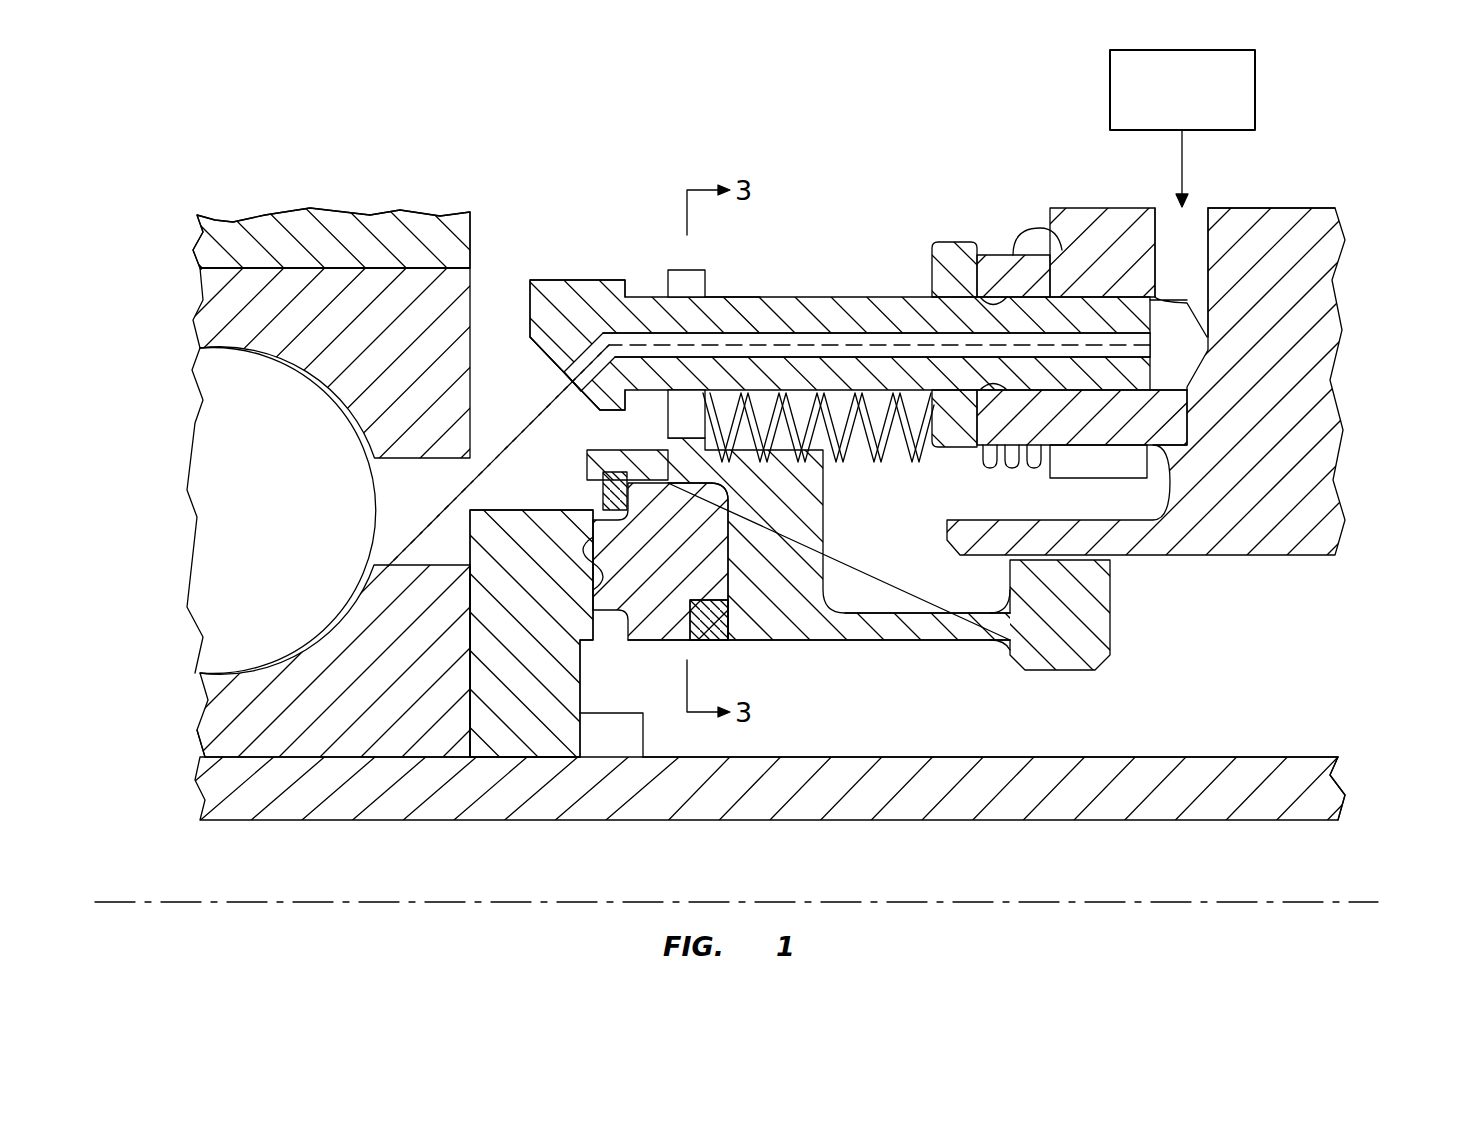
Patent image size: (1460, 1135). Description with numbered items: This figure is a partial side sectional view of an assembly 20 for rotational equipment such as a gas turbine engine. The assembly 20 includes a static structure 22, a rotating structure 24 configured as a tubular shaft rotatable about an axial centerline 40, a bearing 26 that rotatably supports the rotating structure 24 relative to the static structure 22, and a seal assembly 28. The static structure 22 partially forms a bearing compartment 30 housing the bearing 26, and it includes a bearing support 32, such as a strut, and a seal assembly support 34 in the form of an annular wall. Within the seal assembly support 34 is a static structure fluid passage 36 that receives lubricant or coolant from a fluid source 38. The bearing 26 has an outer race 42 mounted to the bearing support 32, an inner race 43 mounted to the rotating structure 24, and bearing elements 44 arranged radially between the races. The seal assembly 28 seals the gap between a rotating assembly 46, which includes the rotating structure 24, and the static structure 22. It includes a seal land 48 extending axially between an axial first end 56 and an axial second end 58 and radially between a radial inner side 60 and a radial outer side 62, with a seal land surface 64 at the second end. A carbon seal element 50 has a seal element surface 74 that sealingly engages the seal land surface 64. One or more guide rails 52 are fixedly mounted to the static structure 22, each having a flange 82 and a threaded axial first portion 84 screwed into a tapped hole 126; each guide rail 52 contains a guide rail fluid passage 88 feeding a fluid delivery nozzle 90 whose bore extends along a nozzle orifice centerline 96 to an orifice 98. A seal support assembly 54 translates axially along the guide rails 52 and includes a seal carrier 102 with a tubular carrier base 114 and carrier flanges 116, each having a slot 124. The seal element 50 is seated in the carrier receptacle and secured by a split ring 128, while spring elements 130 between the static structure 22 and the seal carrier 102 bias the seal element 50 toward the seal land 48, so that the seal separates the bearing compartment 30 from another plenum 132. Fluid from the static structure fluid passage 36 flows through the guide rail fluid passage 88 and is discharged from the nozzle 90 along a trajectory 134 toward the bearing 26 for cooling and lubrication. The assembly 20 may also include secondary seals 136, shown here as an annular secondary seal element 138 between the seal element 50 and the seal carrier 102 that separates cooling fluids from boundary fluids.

The assembly 20 is at (212, 167).
The static structure 22 is at (258, 213).
The rotating structure 24 is at (199, 791).
The bearing 26 is at (181, 662).
The seal assembly 28 is at (772, 686).
The bearing compartment 30 is at (559, 137).
The bearing support 32 is at (340, 212).
The seal assembly support 34 is at (1338, 218).
The static structure fluid passage 36 is at (1179, 248).
The fluid source 38 is at (1255, 88).
The axial centerline 40 is at (1365, 902).
The outer race 42 is at (200, 320).
The inner race 43 is at (200, 728).
The bearing elements 44 is at (197, 556).
The rotating assembly 46 is at (1352, 780).
The seal land 48 is at (493, 760).
The seal element 50 is at (648, 644).
The guide rail 52 is at (808, 297).
The seal support assembly 54 is at (908, 668).
The axial first end 56 is at (470, 680).
The axial second end 58 is at (587, 712).
The radial inner side 60 is at (522, 760).
The radial outer side 62 is at (513, 507).
The seal land surface 64 is at (598, 572).
The seal element surface 74 is at (608, 560).
The flange 82 is at (950, 240).
The axial first portion 84 is at (1095, 412).
The guide rail fluid passage 88 is at (875, 340).
The fluid delivery nozzle 90 is at (582, 278).
The nozzle orifice centerline 96 is at (548, 337).
The orifice 98 is at (572, 378).
The seal carrier 102 is at (869, 626).
The carrier base 114 is at (1111, 623).
The carrier flange 116 is at (712, 276).
The slot 124 is at (672, 272).
The tapped hole 126 is at (1030, 272).
The split ring 128 is at (602, 488).
The spring element 130 is at (888, 470).
The plenum 132 is at (915, 733).
The trajectory 134 is at (441, 498).
The secondary seal 136 is at (705, 642).
The secondary seal element 138 is at (709, 620).